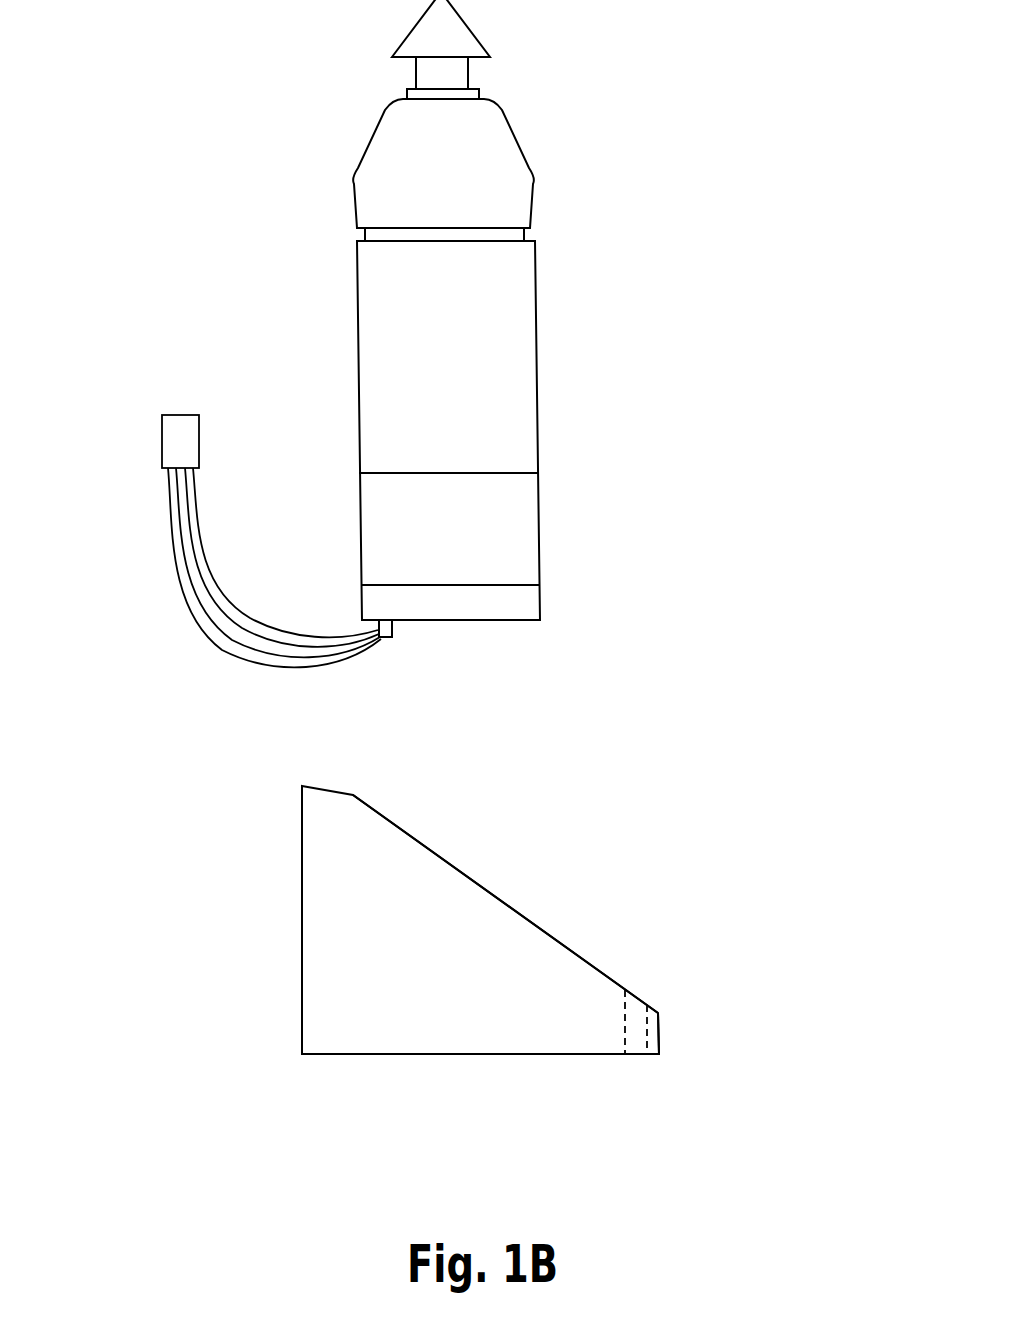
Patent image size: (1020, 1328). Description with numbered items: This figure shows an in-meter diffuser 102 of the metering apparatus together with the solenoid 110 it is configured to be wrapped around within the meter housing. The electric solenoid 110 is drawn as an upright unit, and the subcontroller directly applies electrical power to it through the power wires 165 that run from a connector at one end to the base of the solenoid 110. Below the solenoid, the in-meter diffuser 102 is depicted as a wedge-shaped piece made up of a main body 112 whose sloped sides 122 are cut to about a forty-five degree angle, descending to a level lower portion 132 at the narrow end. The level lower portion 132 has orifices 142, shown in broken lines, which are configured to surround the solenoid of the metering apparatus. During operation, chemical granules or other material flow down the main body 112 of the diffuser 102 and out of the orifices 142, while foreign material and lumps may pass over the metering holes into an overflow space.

The in-meter diffuser 102 is at (850, 109).
The electric solenoid 110 is at (513, 353).
The power wires 165 is at (153, 590).
The main body 112 is at (330, 934).
The sloped sides 122 is at (475, 863).
The orifices 142 is at (635, 1003).
The level lower portion 132 is at (655, 1024).